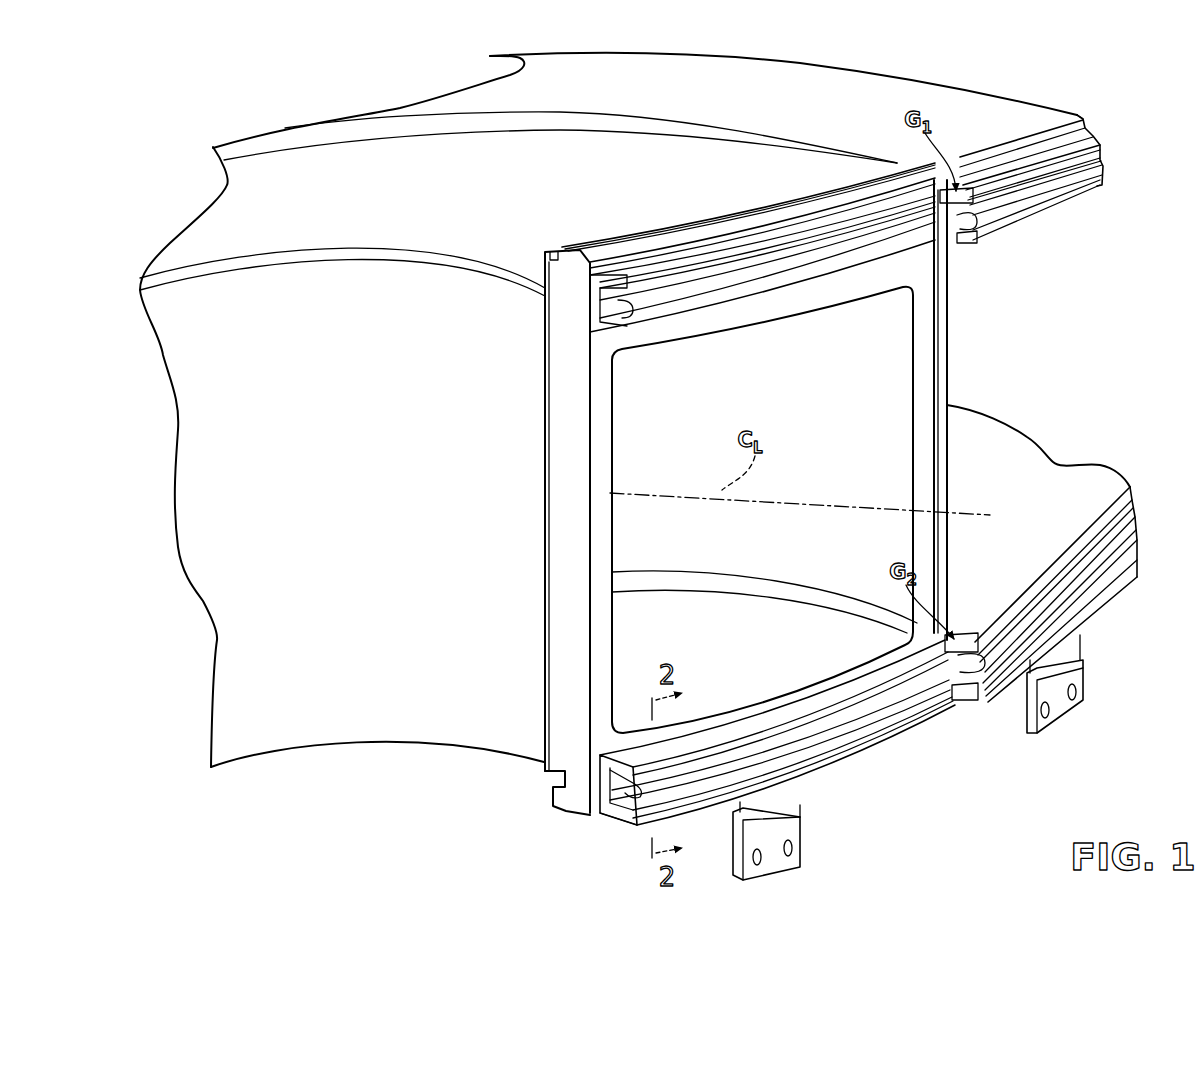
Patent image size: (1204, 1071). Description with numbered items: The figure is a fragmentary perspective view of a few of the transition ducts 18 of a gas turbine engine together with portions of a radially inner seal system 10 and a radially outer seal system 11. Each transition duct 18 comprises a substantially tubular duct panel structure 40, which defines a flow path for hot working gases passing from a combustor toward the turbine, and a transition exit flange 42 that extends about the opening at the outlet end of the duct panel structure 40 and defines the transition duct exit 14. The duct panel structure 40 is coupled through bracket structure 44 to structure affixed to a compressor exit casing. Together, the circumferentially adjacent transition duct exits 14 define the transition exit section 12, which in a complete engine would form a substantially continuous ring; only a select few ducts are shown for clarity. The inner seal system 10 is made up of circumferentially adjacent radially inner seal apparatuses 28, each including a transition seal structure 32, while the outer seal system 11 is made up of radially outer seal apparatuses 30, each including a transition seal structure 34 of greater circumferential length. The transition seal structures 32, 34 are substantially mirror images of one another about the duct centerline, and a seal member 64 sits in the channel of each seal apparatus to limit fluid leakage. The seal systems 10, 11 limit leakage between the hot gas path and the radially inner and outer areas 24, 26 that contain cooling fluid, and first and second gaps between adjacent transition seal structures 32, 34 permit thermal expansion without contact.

The radially inner seal system 10 is at (1081, 107).
The radially outer seal system 11 is at (1141, 545).
The transition exit section 12 is at (895, 766).
The transition duct exit 14 is at (1134, 486).
The transition duct 18 is at (749, 72).
The radially inner area 24 is at (759, 198).
The radially outer area 26 is at (921, 742).
The radially inner seal apparatus 28 is at (1005, 157).
The radially outer seal apparatus 30 is at (1106, 607).
The transition seal structure 32 is at (1053, 137).
The transition seal structure 34 is at (1005, 611).
The duct panel structure 40 is at (375, 152).
The transition exit flange 42 is at (943, 263).
The bracket structure 44 is at (1060, 705).
The seal member 64 is at (1031, 201).